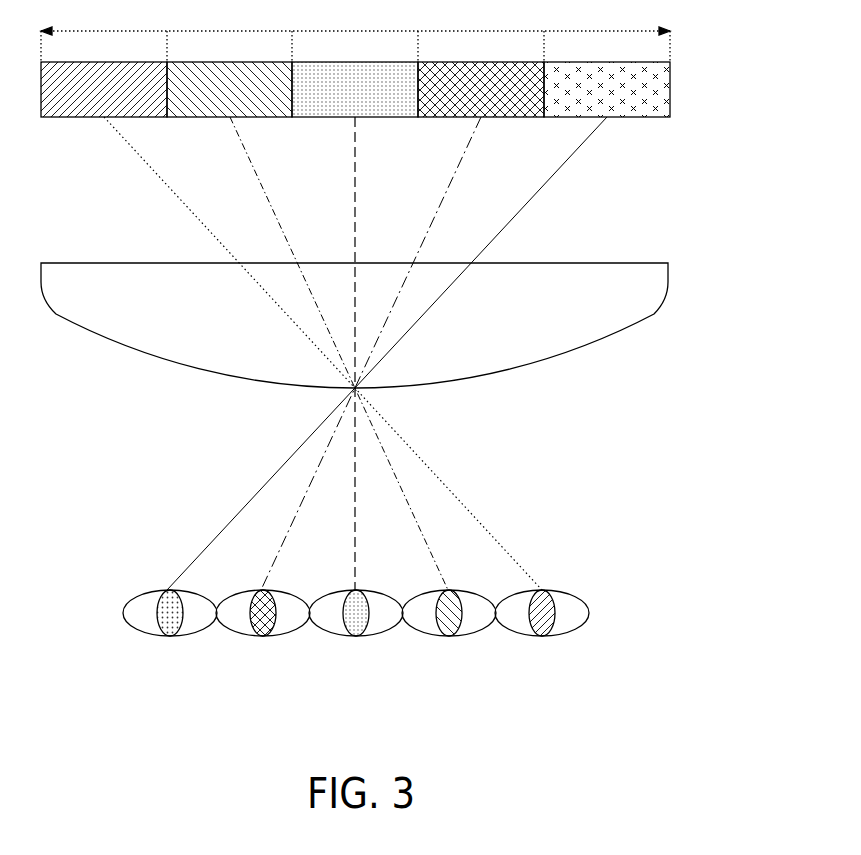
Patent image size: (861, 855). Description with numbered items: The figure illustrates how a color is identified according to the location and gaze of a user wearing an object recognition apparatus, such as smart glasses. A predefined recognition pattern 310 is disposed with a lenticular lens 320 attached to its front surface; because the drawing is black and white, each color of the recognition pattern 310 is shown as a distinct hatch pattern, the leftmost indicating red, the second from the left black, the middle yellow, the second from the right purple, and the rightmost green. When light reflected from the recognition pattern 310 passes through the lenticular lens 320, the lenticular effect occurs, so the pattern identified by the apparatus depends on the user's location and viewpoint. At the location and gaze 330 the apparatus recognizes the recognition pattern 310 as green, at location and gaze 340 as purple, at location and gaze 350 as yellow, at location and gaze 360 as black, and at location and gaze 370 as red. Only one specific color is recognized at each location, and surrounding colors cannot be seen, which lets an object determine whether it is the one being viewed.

The recognition pattern 310 is at (672, 88).
The lenticular lens 320 is at (647, 310).
The location and gaze of the object recognition apparatus 330 is at (170, 637).
The location and gaze of the object recognition apparatus 340 is at (263, 637).
The location and gaze of the object recognition apparatus 350 is at (356, 637).
The location and gaze of the object recognition apparatus 360 is at (449, 637).
The location and gaze of the object recognition apparatus 370 is at (542, 637).